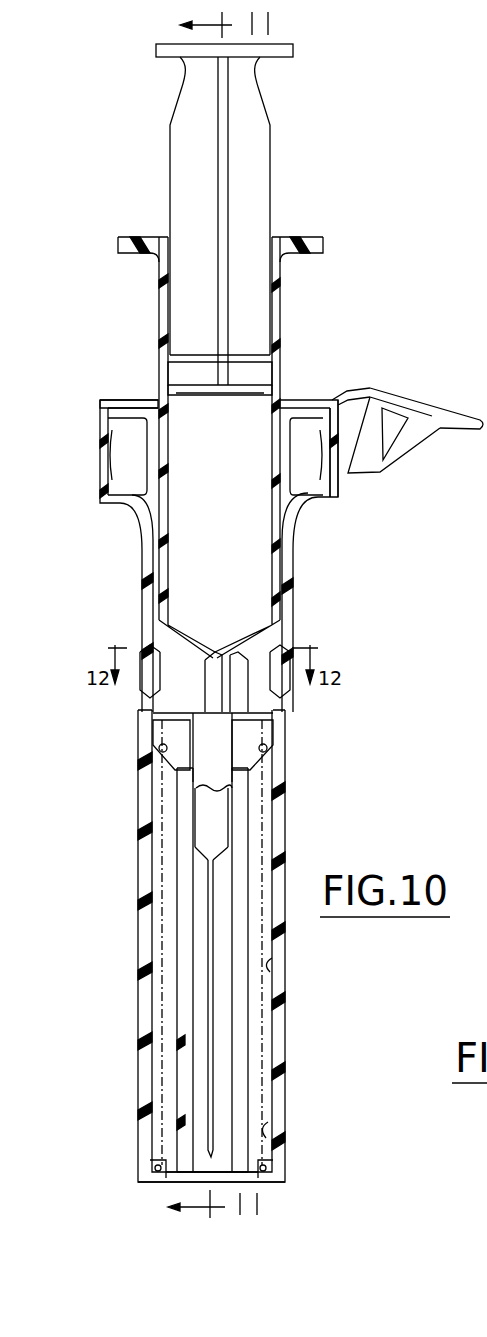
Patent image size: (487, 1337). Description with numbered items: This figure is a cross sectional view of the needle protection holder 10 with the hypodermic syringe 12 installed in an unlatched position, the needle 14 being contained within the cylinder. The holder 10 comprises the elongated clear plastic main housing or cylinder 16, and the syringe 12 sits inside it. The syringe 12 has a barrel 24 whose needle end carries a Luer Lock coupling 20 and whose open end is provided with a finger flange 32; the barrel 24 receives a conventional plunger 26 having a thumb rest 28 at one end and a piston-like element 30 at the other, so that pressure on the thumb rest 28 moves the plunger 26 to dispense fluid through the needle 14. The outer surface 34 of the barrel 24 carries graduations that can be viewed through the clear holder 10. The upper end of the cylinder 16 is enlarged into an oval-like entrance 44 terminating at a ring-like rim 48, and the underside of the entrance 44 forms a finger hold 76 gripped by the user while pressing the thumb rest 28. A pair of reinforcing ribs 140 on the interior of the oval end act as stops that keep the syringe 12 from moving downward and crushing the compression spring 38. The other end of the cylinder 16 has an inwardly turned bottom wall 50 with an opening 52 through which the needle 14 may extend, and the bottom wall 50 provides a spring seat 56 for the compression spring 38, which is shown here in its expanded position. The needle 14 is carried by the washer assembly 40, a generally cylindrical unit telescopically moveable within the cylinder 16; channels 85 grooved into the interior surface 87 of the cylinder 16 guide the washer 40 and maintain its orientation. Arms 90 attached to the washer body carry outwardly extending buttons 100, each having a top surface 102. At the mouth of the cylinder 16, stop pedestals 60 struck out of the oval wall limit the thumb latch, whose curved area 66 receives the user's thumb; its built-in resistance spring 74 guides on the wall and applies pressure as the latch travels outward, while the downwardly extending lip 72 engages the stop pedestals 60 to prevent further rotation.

The needle protection holder 10 is at (92, 900).
The hypodermic syringe 12 is at (372, 118).
The needle 14 is at (213, 1000).
The main housing unit 16 is at (283, 1012).
The Luer Lock coupling 20 is at (225, 766).
The syringe barrel 24 is at (284, 287).
The plunger 26 is at (230, 170).
The thumb rest 28 is at (283, 50).
The piston-like element 30 is at (162, 362).
The finger flange 32 is at (122, 238).
The outer surface of the barrel 34 is at (158, 392).
The compression spring 38 is at (160, 1077).
The washer assembly 40 is at (448, 430).
The oval-like entrance 44 is at (123, 459).
The ring-like rim 48 is at (122, 402).
The bottom wall 50 is at (144, 1180).
The opening 52 is at (183, 1177).
The spring seat 56 is at (156, 1165).
The stop pedestals 60 is at (384, 396).
The curved area 66 is at (440, 420).
The lip 72 is at (345, 396).
The resistance spring 74 is at (345, 484).
The finger hold 76 is at (127, 505).
The channels 85 is at (268, 966).
The interior surface 87 is at (262, 1133).
The arms of the first pair 90 is at (150, 692).
The buttons 100 is at (140, 650).
The top surface 102 is at (290, 652).
The reinforcing ribs 140 is at (128, 437).